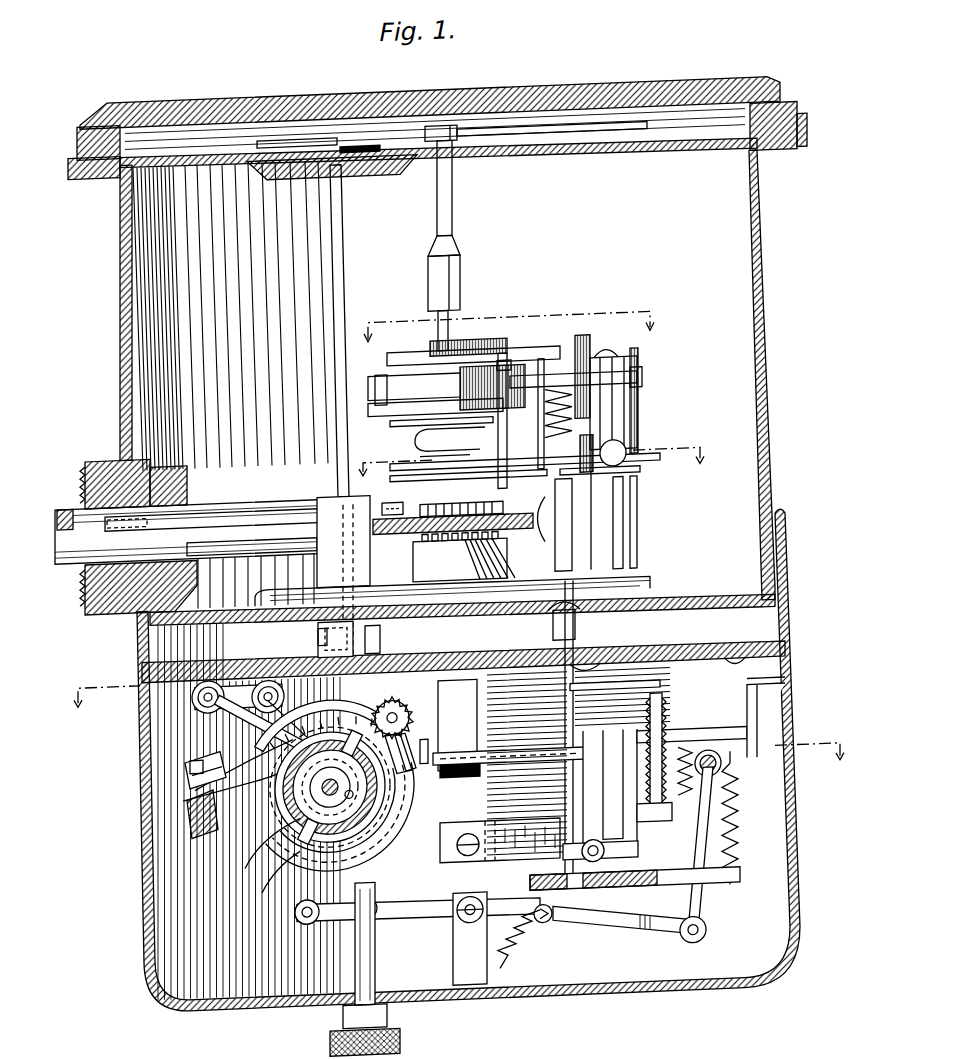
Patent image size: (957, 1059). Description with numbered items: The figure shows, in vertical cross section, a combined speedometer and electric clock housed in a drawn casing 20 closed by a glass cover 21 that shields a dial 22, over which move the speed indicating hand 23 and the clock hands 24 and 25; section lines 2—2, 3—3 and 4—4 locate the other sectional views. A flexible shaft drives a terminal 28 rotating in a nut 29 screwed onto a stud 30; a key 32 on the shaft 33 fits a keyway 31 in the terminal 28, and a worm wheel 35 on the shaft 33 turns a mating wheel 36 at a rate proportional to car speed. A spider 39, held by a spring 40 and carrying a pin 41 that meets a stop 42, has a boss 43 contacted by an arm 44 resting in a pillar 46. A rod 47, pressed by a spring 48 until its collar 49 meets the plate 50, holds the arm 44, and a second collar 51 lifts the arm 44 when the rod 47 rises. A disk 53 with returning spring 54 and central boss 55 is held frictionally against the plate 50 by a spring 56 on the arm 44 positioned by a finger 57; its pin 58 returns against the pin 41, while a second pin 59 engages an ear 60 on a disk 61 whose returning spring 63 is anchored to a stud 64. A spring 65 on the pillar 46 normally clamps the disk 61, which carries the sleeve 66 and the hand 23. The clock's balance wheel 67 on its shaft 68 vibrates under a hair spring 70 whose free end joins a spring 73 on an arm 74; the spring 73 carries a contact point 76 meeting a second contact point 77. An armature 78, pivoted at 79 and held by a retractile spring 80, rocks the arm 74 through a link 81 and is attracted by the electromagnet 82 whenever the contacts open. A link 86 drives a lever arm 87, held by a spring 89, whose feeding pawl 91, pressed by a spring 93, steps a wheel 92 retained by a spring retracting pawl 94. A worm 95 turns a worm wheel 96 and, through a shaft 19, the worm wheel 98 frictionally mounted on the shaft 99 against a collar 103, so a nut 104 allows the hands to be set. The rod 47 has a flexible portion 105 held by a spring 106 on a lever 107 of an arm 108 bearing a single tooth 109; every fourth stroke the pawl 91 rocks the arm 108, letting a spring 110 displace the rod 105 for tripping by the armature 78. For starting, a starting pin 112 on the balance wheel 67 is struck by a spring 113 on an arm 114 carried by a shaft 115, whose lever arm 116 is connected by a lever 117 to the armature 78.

The section line 2— 2 is at (452, 715).
The section line 3— 3 is at (536, 450).
The section line 4— 4 is at (506, 314).
The shaft 19 is at (413, 712).
The drawn casing 20 is at (122, 256).
The glass cover 21 is at (620, 106).
The dial 22 is at (190, 147).
The speed indicating hand 23 is at (500, 130).
The clock hand 24 is at (280, 133).
The hour hand 25 is at (350, 138).
The terminal 28 is at (88, 494).
The nut 29 is at (97, 446).
The stud 30 is at (112, 462).
The shaft bore 31 is at (145, 487).
The key 32 is at (160, 514).
The shaft 33 is at (258, 512).
The worm wheel 35 is at (470, 548).
The mating wheel 36 is at (512, 543).
The spider 39 is at (360, 520).
The spring 40 is at (408, 497).
The pin 41 is at (560, 500).
The stop 42 is at (525, 515).
The boss 43 is at (470, 462).
The arm 44 is at (530, 472).
The pillar 46 is at (640, 507).
The rod 47 is at (567, 552).
The spring 48 is at (547, 403).
The collar 49 is at (582, 355).
The plate 50 is at (640, 382).
The second collar 51 is at (628, 467).
The disk 53 is at (370, 397).
The returning spring 54 is at (395, 418).
The central boss 55 is at (425, 441).
The spring 56 is at (487, 410).
The finger 57 is at (425, 450).
The pin 58 is at (600, 435).
The second pin 59 is at (508, 368).
The ear 60 is at (500, 363).
The disk 61 is at (378, 375).
The returning spring 63 is at (430, 355).
The stud 64 is at (606, 362).
The spring 65 is at (540, 362).
The sleeve 66 is at (437, 314).
The balance wheel 67 is at (297, 900).
The shaft 68 is at (390, 795).
The hair spring 70 is at (380, 844).
The spring 73 is at (275, 817).
The arm 74 is at (287, 852).
The contact point 76 is at (185, 815).
The second contact point 77 is at (185, 789).
The armature 78 is at (410, 911).
The pivot 79 is at (467, 917).
The retractile spring 80 is at (525, 948).
The link 81 is at (372, 872).
The electromagnet 82 is at (512, 662).
The link 86 is at (700, 910).
The lever arm 87 is at (705, 750).
The spring 89 is at (740, 818).
The feeding pawl 91 is at (737, 844).
The wheel 92 is at (666, 718).
The spring 93 is at (730, 793).
The spring retracting pawl 94 is at (660, 694).
The worm 95 is at (430, 739).
The worm wheel 96 is at (452, 660).
The worm wheel 98 is at (318, 648).
The shaft 99 is at (342, 352).
The collar 103 is at (386, 643).
The nut 104 is at (402, 1035).
The flexible portion 105 is at (587, 645).
The spring 106 is at (640, 860).
The lever 107 is at (613, 898).
The arm 108 is at (590, 757).
The single tooth 109 is at (645, 831).
The spring 110 is at (500, 848).
The starting pin 112 is at (305, 766).
The spring 113 is at (273, 733).
The arm 114 is at (217, 733).
The shaft 115 is at (195, 689).
The lever arm 116 is at (237, 680).
The lever 117 is at (220, 720).